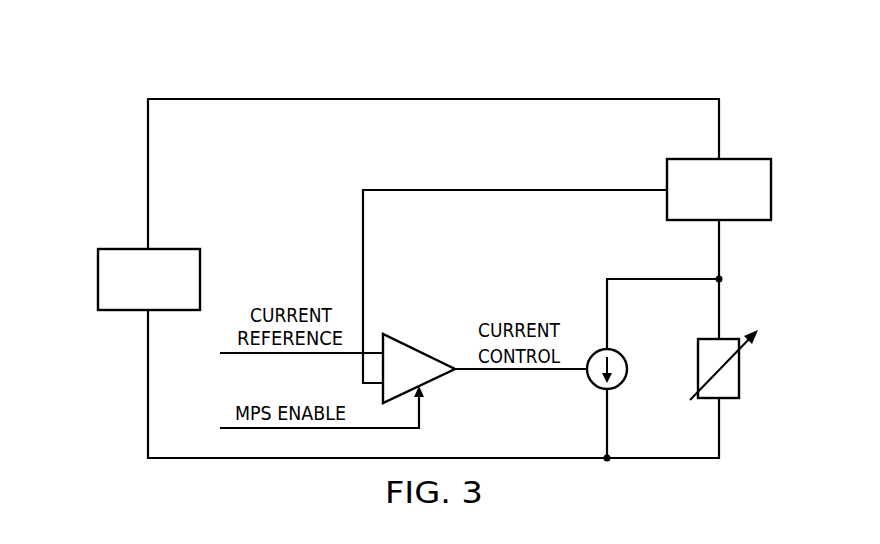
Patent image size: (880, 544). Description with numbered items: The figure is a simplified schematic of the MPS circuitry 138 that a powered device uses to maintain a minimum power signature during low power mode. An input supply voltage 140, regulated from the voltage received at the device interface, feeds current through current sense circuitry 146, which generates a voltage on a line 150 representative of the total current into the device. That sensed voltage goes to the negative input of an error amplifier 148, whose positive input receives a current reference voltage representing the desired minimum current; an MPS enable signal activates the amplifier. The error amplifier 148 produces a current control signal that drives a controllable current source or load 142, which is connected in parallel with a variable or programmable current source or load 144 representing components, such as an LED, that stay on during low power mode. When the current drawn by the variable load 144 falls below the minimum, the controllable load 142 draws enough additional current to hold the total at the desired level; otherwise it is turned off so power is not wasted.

The MPS circuitry 138 is at (675, 66).
The input supply voltage 140 is at (98, 280).
The controllable current source or load 142 is at (622, 384).
The variable or programmable current source or load 144 is at (740, 378).
The current sense circuitry 146 is at (771, 179).
The error amplifier 148 is at (421, 351).
The line 150 is at (363, 229).